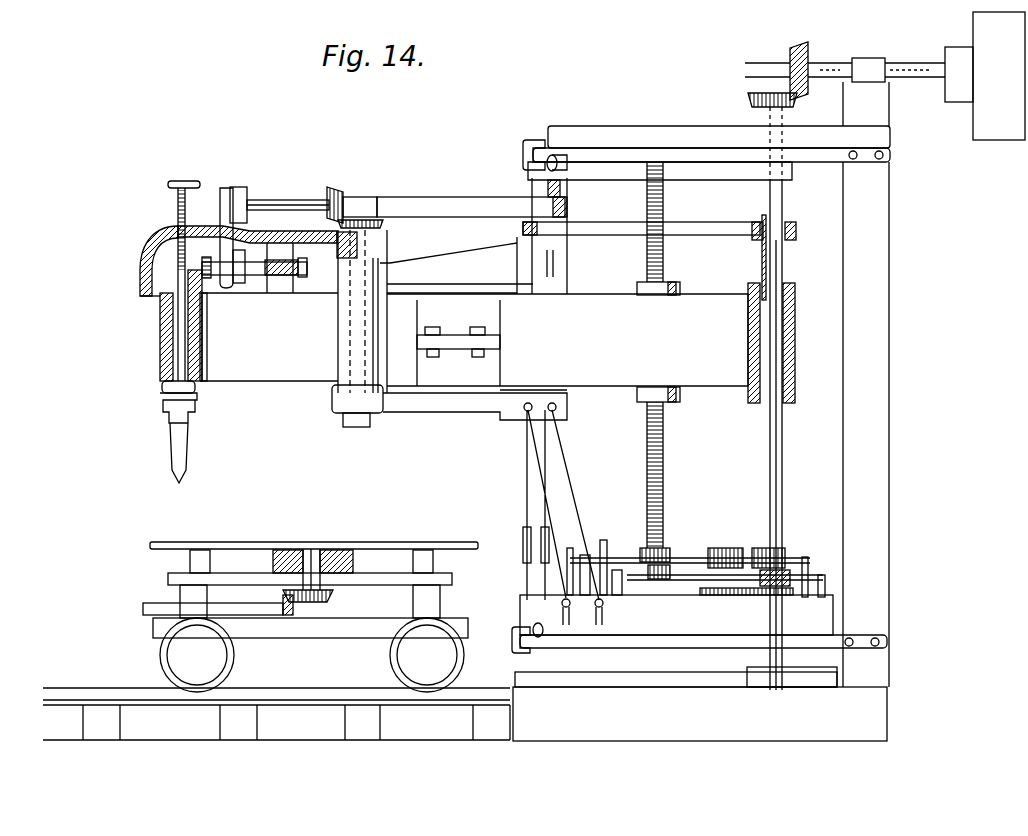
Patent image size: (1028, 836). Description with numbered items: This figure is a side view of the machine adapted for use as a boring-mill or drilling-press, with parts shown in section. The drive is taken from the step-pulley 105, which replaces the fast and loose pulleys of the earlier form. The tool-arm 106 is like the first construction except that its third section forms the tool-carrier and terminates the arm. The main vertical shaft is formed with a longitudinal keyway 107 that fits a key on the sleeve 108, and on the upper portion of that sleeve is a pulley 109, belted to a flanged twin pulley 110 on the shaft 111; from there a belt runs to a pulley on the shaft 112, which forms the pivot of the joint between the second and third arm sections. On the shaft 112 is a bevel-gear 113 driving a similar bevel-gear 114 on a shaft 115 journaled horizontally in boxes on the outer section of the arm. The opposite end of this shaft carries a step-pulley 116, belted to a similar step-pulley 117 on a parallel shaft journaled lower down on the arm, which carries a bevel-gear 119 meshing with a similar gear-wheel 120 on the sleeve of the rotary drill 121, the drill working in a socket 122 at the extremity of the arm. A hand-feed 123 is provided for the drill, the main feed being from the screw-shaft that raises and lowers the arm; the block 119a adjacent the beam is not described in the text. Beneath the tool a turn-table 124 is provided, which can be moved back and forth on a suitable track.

The step-pulley 105 is at (885, 76).
The tool-arm 106 is at (449, 414).
The longitudinal keyway 107 is at (782, 265).
The sleeve 108 is at (785, 250).
The pulley 109 is at (790, 226).
The flanged twin pulley 110 is at (556, 223).
The shaft 111 is at (553, 200).
The shaft 112 is at (380, 226).
The bevel-gear 113 is at (337, 230).
The bevel-gear 114 is at (335, 188).
The shaft 115 is at (285, 199).
The step-pulley 116 is at (243, 190).
The step-pulley 117 is at (235, 262).
The bevel-gear 119 is at (206, 257).
The block 119a is at (372, 196).
The gear-wheel 120 is at (238, 303).
The rotary drill 121 is at (205, 311).
The socket 122 is at (197, 345).
The hand-feed 123 is at (185, 189).
The turn-table 124 is at (300, 541).